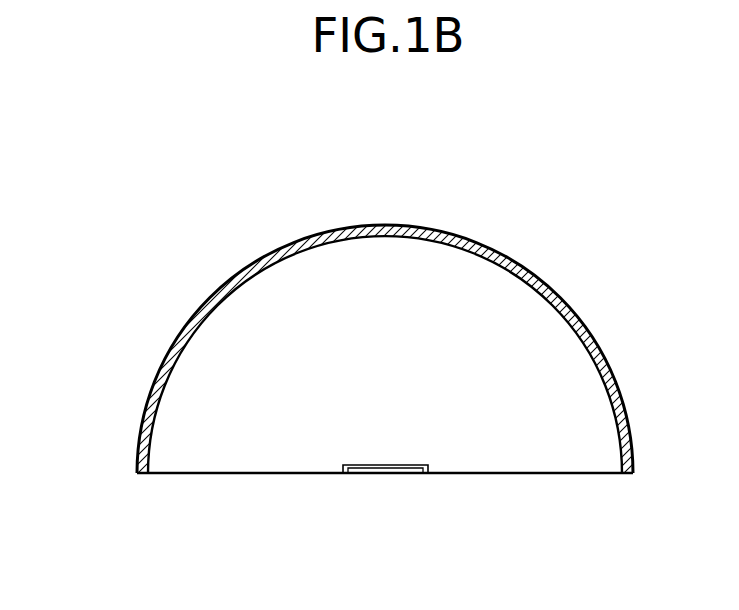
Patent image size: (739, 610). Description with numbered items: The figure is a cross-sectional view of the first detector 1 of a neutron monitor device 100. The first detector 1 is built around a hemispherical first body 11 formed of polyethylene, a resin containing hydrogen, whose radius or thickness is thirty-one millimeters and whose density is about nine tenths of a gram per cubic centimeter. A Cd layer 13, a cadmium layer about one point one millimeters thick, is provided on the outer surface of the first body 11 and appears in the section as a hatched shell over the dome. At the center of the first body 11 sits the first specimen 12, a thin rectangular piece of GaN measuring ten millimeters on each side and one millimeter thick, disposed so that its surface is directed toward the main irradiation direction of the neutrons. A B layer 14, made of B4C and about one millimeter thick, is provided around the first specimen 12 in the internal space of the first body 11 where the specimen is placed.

The neutron monitor device 100 is at (628, 173).
The first detector 1 is at (240, 218).
The first body 11 is at (192, 405).
The Cd layer 13 is at (535, 279).
The first specimen 12 is at (407, 472).
The B layer 14 is at (350, 465).